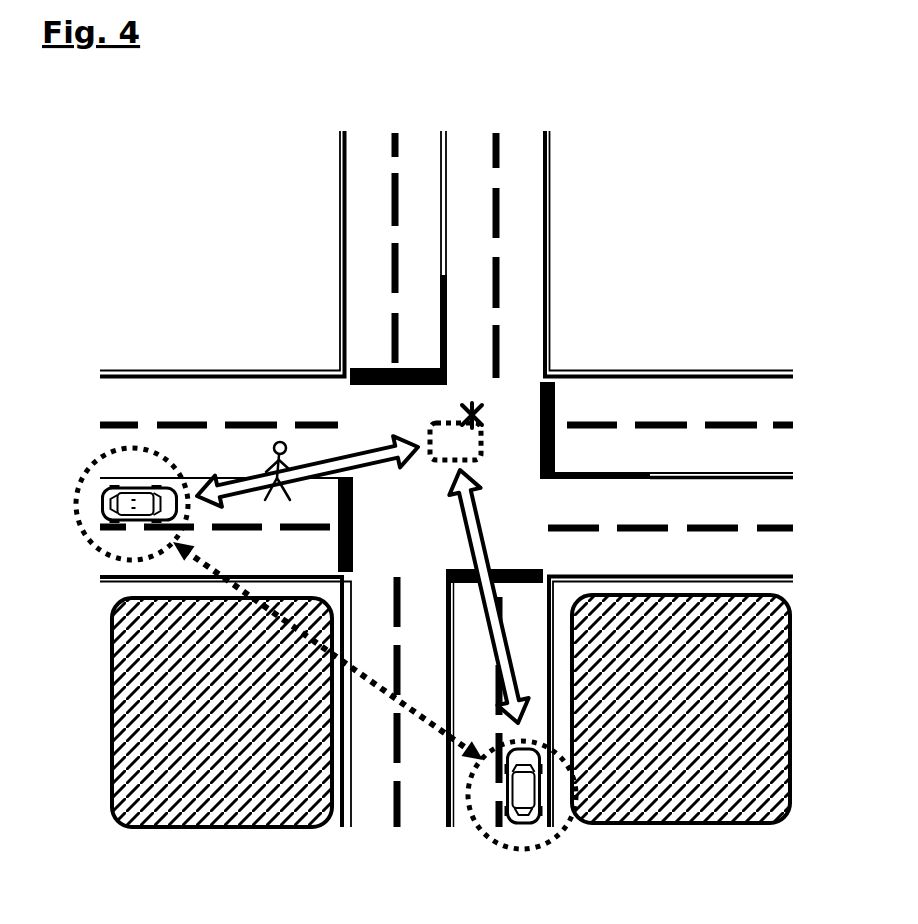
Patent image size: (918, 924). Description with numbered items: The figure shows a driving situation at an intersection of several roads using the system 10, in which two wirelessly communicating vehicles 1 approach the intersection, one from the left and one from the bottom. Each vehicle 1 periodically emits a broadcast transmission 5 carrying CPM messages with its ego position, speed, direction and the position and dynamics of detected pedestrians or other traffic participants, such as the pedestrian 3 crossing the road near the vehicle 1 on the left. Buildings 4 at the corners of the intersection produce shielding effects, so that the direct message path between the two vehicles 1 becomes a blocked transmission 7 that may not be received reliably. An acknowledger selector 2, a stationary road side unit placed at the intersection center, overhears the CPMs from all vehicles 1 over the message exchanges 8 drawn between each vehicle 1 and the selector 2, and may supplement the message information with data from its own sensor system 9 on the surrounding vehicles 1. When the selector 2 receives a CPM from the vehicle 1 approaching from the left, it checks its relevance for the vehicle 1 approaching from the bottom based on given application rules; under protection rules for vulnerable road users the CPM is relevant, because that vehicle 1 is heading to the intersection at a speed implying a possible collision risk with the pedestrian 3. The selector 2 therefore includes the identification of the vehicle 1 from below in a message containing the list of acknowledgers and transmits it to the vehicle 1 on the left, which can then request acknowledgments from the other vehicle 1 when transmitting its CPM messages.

The vehicle 1 is at (105, 487).
The acknowledger selector 2 is at (433, 430).
The pedestrian 3 is at (284, 441).
The building 4 is at (110, 723).
The broadcast transmission 5 is at (96, 546).
The blocked transmission 7 is at (362, 678).
The line of sight / detection direction 8 is at (357, 456).
The sensor system 9 is at (481, 417).
The system 10 is at (165, 215).